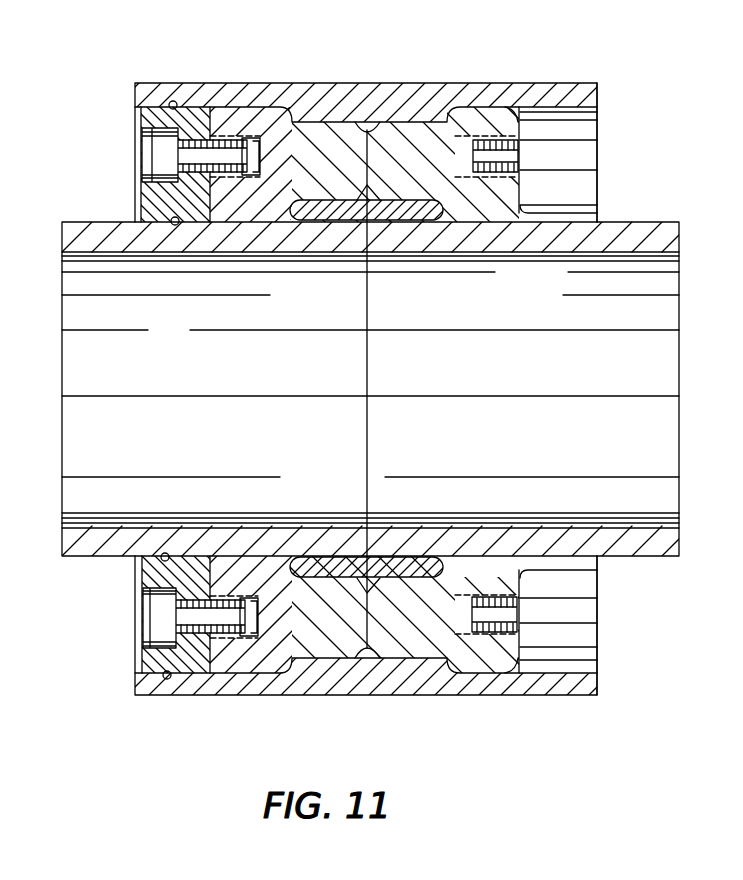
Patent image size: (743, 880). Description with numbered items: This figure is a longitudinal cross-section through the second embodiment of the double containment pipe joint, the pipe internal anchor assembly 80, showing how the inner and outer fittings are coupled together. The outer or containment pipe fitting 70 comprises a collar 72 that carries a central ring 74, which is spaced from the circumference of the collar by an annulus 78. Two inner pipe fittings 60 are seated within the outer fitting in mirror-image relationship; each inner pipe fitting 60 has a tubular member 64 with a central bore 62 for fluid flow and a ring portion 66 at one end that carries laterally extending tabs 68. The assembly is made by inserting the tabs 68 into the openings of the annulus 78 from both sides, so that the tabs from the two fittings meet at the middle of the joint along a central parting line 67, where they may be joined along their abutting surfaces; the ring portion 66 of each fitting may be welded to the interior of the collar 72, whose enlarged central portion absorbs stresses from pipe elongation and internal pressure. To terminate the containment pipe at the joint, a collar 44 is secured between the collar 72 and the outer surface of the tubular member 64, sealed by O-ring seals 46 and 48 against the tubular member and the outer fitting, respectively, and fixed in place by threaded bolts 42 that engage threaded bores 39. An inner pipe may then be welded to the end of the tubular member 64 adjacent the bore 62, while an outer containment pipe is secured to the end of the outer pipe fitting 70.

The threaded bores 39 is at (247, 136).
The threaded bolts 42 is at (162, 150).
The collar 44 is at (168, 662).
The O-ring seal 46 is at (175, 226).
The O-ring seal 48 is at (173, 100).
The inner pipe fitting 60 is at (548, 180).
The central bore 62 is at (615, 310).
The tubular member 64 is at (652, 222).
The ring portion 66 is at (500, 117).
The parting line 67 is at (370, 240).
The tabs 68 is at (410, 122).
The outer pipe fitting 70 is at (575, 80).
The collar 72 is at (440, 95).
The central ring 74 is at (436, 212).
The annulus 78 is at (337, 212).
The pipe joint assembly 80 is at (495, 81).